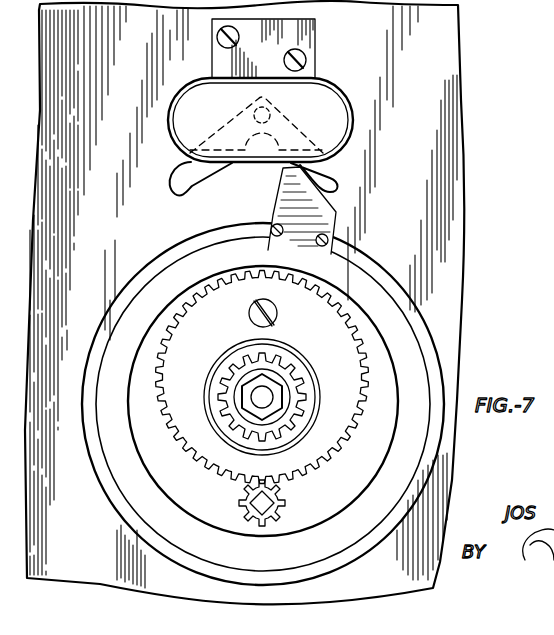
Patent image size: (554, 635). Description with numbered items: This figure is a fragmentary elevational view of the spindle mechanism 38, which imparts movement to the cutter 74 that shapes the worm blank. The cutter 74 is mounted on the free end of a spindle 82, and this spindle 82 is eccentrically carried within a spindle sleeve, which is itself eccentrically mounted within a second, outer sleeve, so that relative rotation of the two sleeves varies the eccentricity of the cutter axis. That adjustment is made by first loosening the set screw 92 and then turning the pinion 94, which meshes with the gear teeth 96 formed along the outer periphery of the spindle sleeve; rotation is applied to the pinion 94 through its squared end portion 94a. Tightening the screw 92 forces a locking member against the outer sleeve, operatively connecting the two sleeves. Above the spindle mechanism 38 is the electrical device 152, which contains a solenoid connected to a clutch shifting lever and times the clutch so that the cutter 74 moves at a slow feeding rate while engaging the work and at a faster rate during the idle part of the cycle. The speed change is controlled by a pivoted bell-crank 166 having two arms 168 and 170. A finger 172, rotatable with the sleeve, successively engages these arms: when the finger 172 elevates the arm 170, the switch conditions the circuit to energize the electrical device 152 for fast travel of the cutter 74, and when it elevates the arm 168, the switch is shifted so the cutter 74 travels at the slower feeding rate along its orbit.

The spindle mechanism 38 is at (402, 362).
The cutter 74 is at (295, 378).
The spindle 82 is at (261, 397).
The set screw 92 is at (249, 313).
The pinion 94 is at (286, 505).
The squared end portion 94a is at (250, 501).
The gear teeth 96 is at (341, 441).
The electrical device 152 is at (362, 95).
The pivoted bell-crank 166 is at (290, 108).
The bell-crank arm 168 is at (184, 188).
The bell-crank arm 170 is at (338, 172).
The finger 172 is at (333, 214).